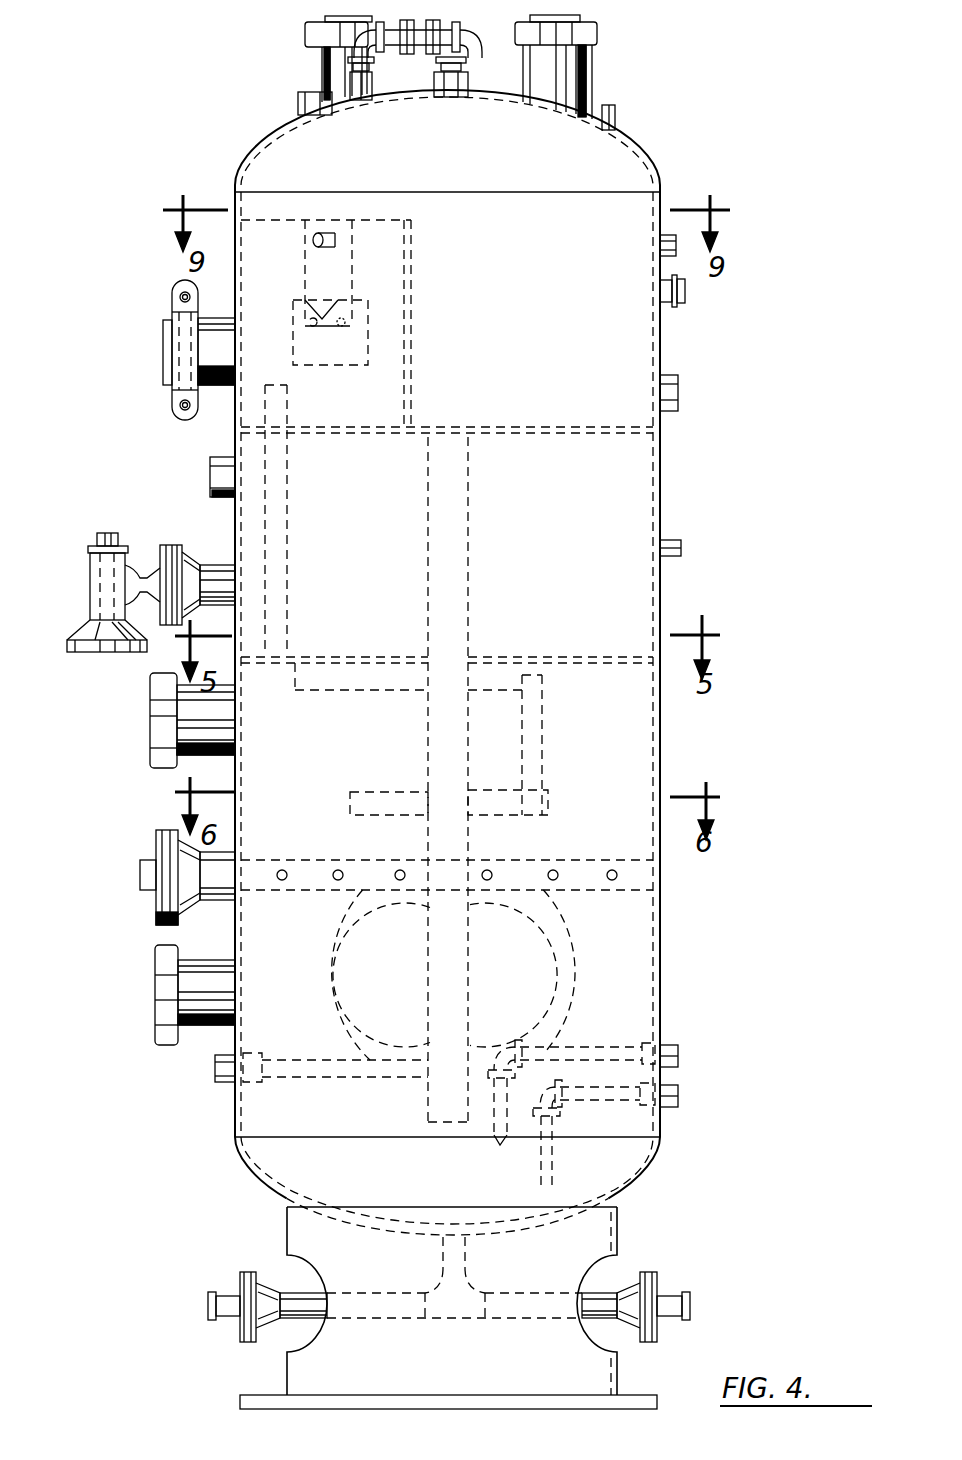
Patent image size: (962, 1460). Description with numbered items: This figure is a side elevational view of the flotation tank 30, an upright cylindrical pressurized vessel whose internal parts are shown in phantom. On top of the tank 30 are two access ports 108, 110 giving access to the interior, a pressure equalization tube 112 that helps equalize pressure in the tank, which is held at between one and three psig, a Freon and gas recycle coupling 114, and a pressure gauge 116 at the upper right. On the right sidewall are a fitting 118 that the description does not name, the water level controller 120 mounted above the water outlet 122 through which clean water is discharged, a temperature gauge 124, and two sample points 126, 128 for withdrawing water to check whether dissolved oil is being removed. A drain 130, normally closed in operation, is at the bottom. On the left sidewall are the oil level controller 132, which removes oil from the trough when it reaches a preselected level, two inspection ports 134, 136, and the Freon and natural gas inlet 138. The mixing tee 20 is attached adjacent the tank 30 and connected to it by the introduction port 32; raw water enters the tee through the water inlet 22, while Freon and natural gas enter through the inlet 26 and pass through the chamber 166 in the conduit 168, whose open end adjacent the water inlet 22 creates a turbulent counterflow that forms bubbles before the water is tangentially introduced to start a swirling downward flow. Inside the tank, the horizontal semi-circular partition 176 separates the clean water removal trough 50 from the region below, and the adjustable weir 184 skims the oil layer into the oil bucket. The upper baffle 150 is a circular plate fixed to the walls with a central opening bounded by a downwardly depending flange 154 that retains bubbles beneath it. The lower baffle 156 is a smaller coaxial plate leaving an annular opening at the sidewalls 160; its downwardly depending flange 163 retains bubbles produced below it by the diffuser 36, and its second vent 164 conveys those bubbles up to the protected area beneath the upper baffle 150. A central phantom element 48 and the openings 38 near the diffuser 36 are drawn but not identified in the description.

The flotation tank 30 is at (718, 65).
The clean water removal trough 50 is at (620, 348).
The access port 108 is at (305, 33).
The access port 110 is at (597, 30).
The pressure equalization tube 112 is at (430, 27).
The Freon and gas recycle coupling 114 is at (298, 101).
The pressure gauge 116 is at (615, 116).
The side nozzle 118 is at (660, 243).
The water level controller 120 is at (685, 292).
The water outlet 122 is at (678, 394).
The temperature gauge 124 is at (681, 548).
The sample point 126 is at (678, 1052).
The sample point 128 is at (678, 1093).
The drain 130 is at (245, 1273).
The oil level controller 132 is at (172, 313).
The inspection port 134 is at (150, 713).
The inspection port 136 is at (155, 967).
The Freon and natural gas inlet 138 is at (226, 890).
The sidewalls 160 is at (661, 723).
The horizontal semi-circular partition 176 is at (556, 427).
The adjustable weir 184 is at (372, 302).
The central downcomer 48 is at (450, 515).
The upper baffle 150 is at (601, 657).
The downwardly depending flange 154 is at (295, 690).
The lower baffle 156 is at (398, 792).
The downwardly depending flange 163 is at (350, 805).
The second vent 164 is at (540, 745).
The diffuser 36 is at (525, 870).
The tray openings 38 is at (283, 882).
The mixing tee 20 is at (138, 537).
The Freon and natural gas inlet 26 is at (97, 538).
The chamber 166 is at (92, 571).
The conduit 168 is at (94, 600).
The water inlet 22 is at (92, 652).
The introduction port 32 is at (212, 572).